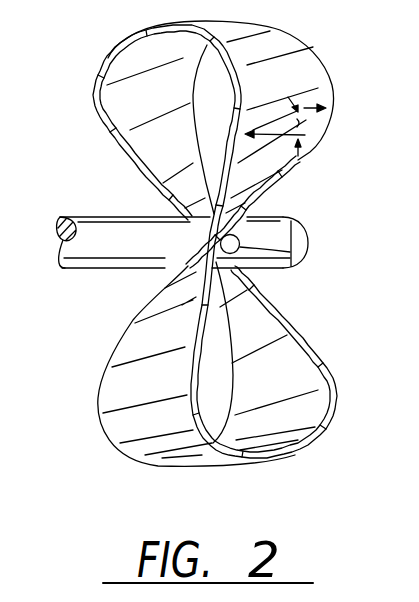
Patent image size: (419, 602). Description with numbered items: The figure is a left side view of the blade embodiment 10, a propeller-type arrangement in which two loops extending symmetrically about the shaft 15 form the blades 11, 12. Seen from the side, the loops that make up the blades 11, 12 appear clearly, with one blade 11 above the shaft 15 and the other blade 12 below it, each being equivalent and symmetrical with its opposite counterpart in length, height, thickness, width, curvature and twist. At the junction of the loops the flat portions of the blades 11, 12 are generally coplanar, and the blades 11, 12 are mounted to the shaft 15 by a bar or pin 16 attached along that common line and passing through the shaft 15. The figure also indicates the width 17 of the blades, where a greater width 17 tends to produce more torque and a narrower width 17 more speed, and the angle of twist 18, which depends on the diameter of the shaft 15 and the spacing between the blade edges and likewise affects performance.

The blade embodiment 10 is at (84, 110).
The blade 11 is at (320, 68).
The blade 12 is at (302, 403).
The shaft 15 is at (280, 217).
The bar or pin 16 is at (306, 251).
The width 17 is at (299, 111).
The angle of twist 18 is at (305, 135).